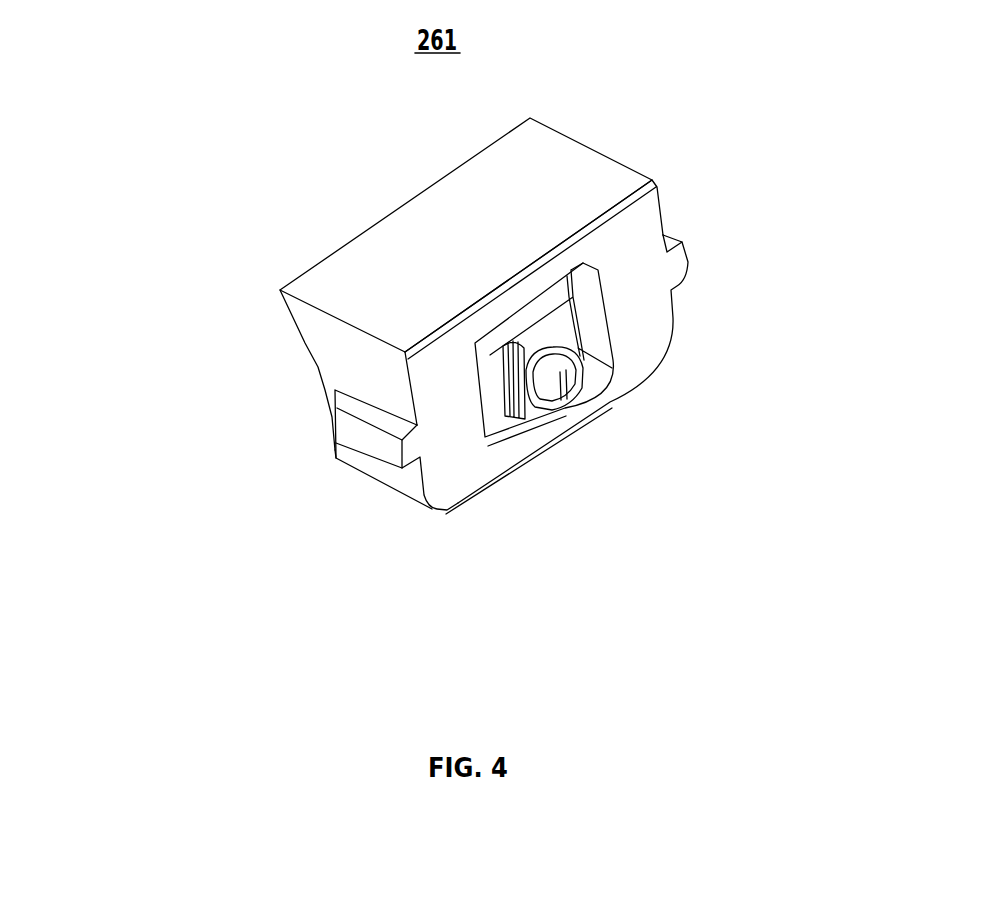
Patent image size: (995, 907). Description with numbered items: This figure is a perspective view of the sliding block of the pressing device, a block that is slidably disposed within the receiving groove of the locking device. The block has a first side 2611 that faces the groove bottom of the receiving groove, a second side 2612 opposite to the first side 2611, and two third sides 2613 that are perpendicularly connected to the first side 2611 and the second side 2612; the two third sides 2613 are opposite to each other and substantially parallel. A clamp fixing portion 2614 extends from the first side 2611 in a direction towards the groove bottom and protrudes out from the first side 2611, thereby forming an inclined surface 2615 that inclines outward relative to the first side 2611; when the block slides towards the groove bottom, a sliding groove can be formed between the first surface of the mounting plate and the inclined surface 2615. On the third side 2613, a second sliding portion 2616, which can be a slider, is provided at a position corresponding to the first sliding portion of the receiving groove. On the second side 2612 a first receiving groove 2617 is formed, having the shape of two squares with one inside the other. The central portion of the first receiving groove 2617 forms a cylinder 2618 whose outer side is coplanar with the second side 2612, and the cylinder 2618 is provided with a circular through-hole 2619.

The first side 2611 is at (322, 410).
The second side 2612 is at (460, 460).
The third side 2613 is at (405, 483).
The clamp fixing portion 2614 is at (295, 312).
The inclined surface 2615 is at (292, 317).
The second sliding portion 2616 is at (378, 445).
The first receiving groove 2617 is at (573, 298).
The cylinder 2618 is at (548, 327).
The circular through-hole 2619 is at (562, 378).